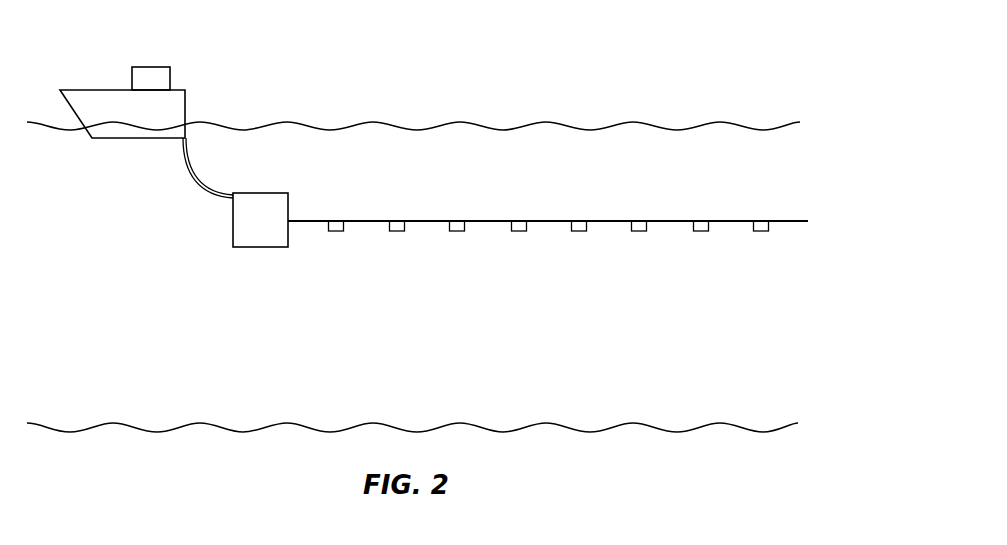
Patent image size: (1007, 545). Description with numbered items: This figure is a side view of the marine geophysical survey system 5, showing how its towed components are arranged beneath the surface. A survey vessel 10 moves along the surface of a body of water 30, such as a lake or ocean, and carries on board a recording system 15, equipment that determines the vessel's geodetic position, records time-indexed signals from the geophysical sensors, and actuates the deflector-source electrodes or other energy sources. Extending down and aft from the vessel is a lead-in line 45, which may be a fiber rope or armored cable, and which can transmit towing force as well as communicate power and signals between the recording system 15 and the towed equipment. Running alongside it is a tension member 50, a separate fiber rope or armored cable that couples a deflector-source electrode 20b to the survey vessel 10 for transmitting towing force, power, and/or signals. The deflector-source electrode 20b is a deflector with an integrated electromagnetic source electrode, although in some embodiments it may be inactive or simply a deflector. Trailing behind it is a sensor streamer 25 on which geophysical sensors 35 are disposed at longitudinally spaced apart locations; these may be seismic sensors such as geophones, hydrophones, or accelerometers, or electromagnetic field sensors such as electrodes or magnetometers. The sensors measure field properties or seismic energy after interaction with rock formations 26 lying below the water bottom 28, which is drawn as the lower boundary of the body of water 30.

The marine geophysical survey system 5 is at (258, 67).
The survey vessel 10 is at (103, 89).
The recording system 15 is at (170, 79).
The deflector-source electrode 20b is at (233, 221).
The sensor streamer 25 is at (362, 221).
The rock formations 26 is at (574, 465).
The water bottom 28 is at (628, 422).
The body of water 30 is at (142, 280).
The geophysical sensors 35 is at (397, 232).
The lead-in line 45 is at (195, 180).
The tension member 50 is at (195, 184).